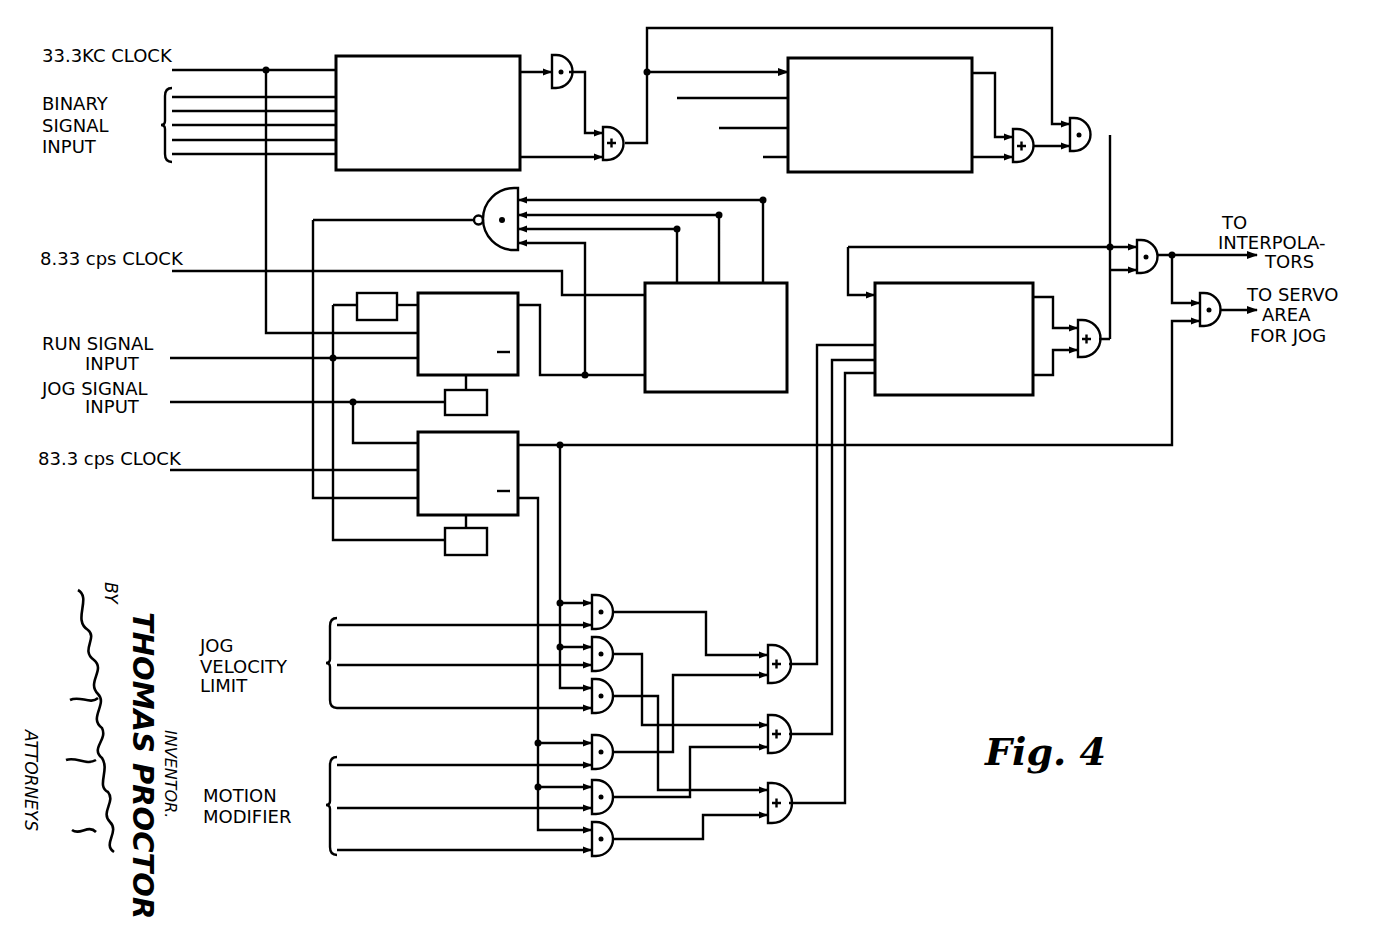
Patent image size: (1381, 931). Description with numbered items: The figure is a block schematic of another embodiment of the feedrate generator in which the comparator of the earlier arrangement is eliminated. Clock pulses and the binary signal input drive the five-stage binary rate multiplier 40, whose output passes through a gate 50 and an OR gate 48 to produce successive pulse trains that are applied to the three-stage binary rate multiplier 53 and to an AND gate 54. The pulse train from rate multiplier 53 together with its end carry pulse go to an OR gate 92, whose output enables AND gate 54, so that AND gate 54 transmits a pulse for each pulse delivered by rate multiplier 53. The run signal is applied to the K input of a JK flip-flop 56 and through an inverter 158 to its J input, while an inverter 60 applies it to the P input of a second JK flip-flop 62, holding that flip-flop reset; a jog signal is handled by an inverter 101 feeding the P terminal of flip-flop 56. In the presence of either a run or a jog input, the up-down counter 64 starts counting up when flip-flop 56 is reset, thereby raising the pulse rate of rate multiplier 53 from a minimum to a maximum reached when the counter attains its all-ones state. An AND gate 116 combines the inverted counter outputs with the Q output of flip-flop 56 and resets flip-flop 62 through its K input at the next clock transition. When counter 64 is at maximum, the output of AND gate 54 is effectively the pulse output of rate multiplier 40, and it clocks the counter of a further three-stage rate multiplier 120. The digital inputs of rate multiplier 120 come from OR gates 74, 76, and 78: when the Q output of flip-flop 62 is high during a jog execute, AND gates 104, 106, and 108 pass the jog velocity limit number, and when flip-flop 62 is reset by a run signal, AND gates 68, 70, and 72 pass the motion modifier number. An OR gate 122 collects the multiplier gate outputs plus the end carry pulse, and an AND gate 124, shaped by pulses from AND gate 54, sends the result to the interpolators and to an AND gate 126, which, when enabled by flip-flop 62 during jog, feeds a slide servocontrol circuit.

The five-stage binary rate multiplier 40 is at (478, 50).
The AND gate 50 is at (560, 57).
The OR gate 48 is at (629, 118).
The three-stage binary rate multiplier 53 is at (975, 62).
The OR gate 92 is at (1036, 117).
The AND gate 54 is at (1083, 118).
The AND gate 116 is at (492, 195).
The up-down counter 64 is at (775, 283).
The three-stage rate multiplier 120 is at (978, 283).
The OR gate 122 is at (1098, 310).
The AND gate 124 is at (1158, 230).
The AND gate 126 is at (1221, 283).
The inverter 158 is at (352, 293).
The JK flip-flop 56 is at (520, 302).
The inverter 101 is at (487, 408).
The JK flip-flop 62 is at (520, 442).
The inverter 60 is at (487, 546).
The AND gate 104 is at (605, 598).
The AND gate 106 is at (605, 640).
The AND gate 108 is at (605, 682).
The AND gate 68 is at (605, 738).
The AND gate 70 is at (605, 783).
The AND gate 72 is at (605, 825).
The OR gate 74 is at (778, 648).
The OR gate 76 is at (778, 718).
The OR gate 78 is at (780, 786).